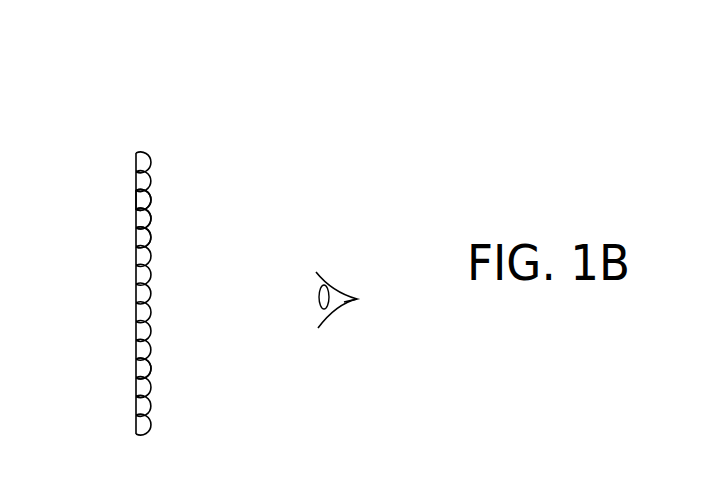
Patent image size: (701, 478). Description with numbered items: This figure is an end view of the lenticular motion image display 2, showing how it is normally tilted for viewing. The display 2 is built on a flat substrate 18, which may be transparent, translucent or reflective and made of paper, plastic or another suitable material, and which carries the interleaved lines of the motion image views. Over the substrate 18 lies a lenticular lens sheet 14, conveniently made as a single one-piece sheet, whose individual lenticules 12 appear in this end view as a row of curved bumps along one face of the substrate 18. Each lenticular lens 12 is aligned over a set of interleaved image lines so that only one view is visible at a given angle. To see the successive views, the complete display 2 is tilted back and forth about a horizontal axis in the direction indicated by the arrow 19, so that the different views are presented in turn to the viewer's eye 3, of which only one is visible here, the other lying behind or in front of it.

The lenticular motion image display 2 is at (165, 282).
The viewer's eye 3 is at (338, 299).
The lenticular lens 12 is at (148, 202).
The lenticular lens sheet 14 is at (158, 372).
The flat substrate 18 is at (136, 202).
The arrow 19 is at (68, 146).